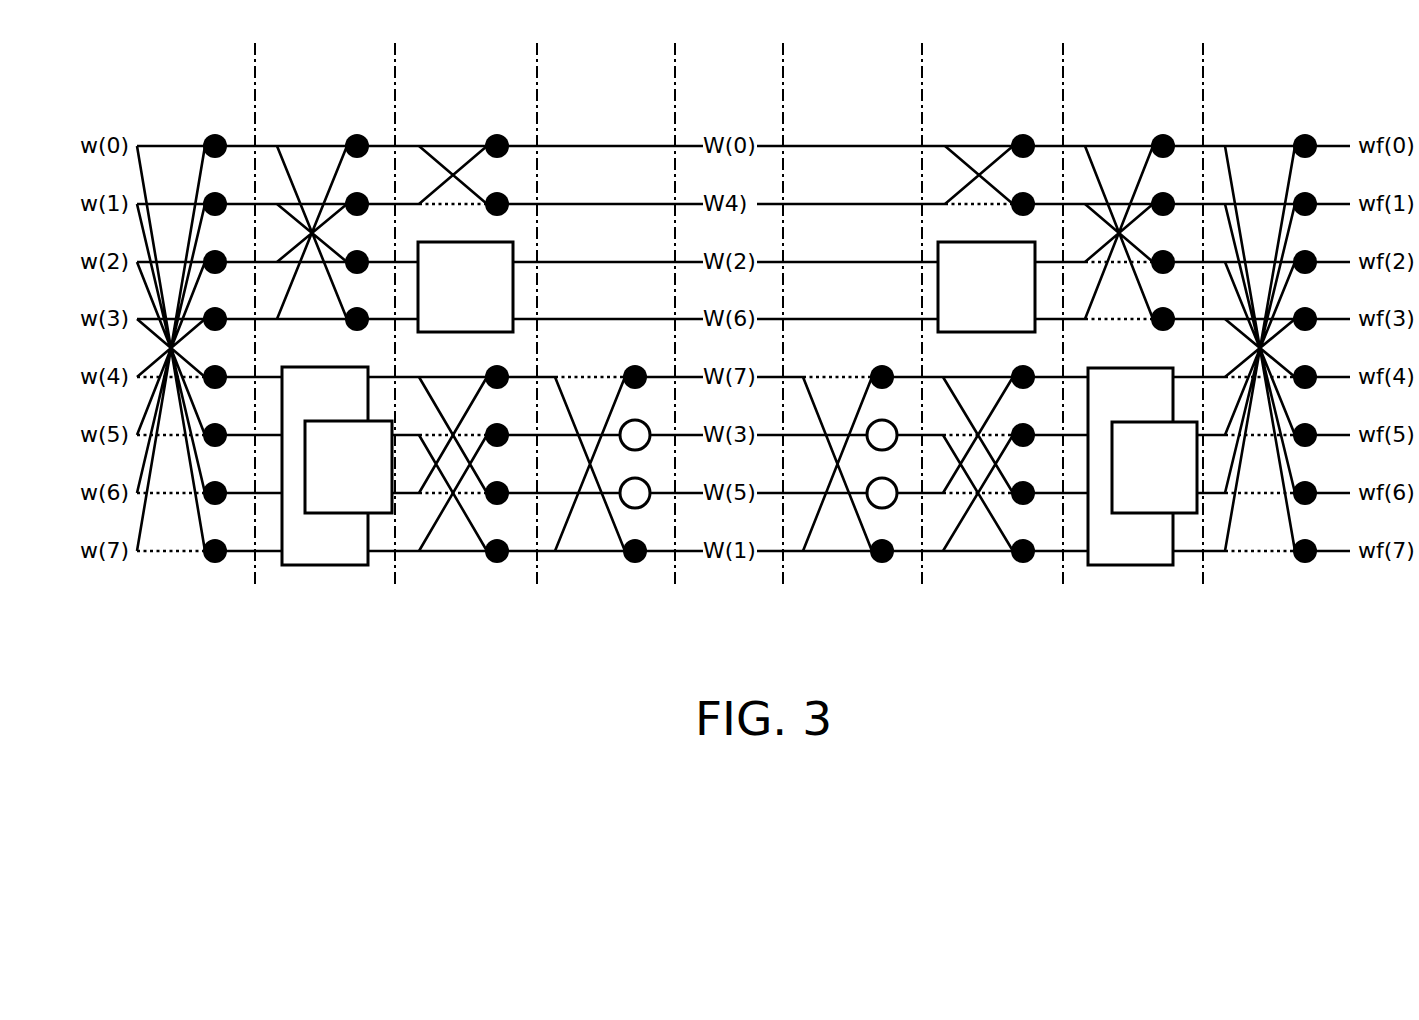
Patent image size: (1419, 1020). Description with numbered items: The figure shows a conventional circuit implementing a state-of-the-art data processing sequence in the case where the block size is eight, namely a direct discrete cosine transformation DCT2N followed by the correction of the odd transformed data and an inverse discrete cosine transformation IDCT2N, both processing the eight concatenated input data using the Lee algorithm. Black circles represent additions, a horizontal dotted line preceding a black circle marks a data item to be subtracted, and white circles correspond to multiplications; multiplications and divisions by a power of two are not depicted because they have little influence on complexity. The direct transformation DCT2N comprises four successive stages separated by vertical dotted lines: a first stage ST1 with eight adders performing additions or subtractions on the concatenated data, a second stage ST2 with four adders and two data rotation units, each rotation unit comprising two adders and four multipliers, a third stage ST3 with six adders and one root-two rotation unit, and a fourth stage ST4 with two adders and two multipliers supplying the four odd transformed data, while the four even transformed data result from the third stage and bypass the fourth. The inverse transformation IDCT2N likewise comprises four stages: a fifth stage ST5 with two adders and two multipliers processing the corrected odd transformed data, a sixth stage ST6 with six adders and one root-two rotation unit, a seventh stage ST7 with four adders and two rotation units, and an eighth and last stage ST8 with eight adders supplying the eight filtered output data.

The first stage ST1 is at (115, 100).
The second stage ST2 is at (255, 100).
The third stage ST3 is at (395, 100).
The fourth stage ST4 is at (537, 100).
The fifth stage ST5 is at (783, 100).
The sixth stage ST6 is at (922, 100).
The seventh stage ST7 is at (1063, 100).
The eighth stage ST8 is at (1203, 100).
The discrete cosine transformation DCT2N is at (113, 595).
The inverse discrete cosine transformation IDCT2N is at (783, 593).